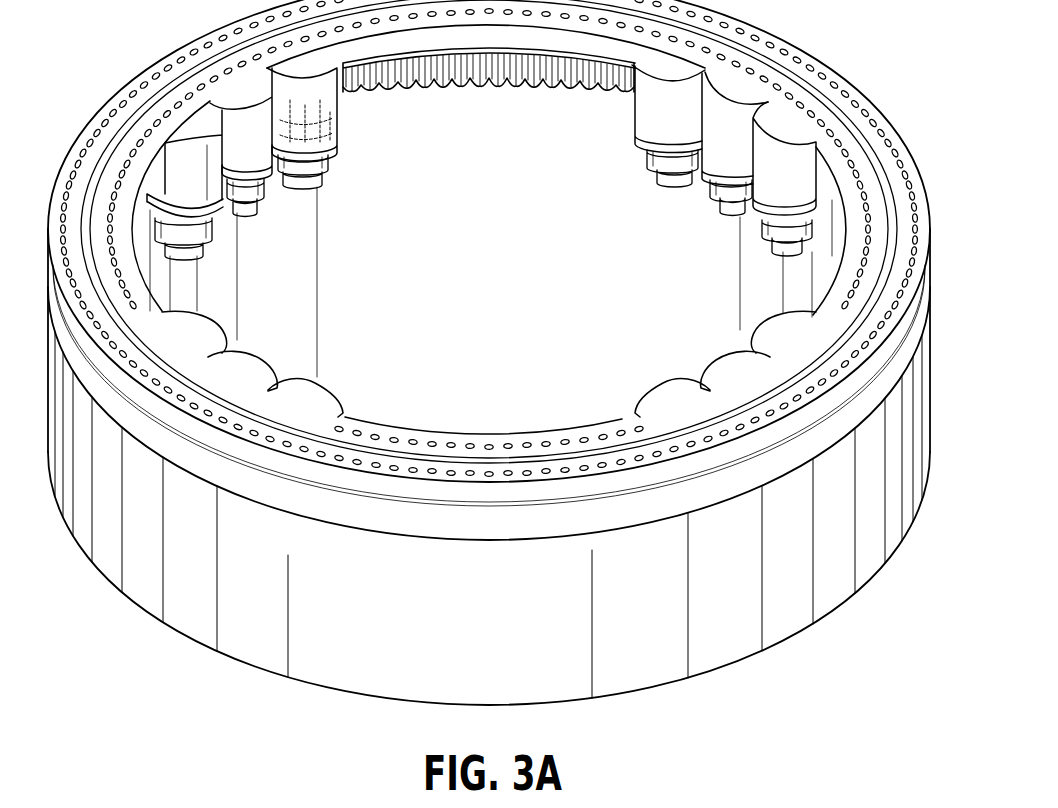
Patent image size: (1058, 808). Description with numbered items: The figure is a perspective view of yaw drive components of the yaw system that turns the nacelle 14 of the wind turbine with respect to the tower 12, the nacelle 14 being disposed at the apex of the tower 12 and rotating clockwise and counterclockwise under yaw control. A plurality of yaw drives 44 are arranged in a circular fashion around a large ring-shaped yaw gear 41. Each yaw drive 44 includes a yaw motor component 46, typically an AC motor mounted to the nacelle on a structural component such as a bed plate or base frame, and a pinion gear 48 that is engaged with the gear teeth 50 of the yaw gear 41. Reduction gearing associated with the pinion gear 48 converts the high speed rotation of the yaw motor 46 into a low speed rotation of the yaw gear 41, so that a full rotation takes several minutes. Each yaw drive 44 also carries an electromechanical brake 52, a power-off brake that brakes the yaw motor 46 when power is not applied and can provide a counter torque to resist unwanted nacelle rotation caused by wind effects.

The tower 12 is at (926, 382).
The nacelle 14 is at (205, 72).
The yaw gear 41 is at (486, 81).
The yaw drive 44 is at (340, 106).
The yaw motor component 46 is at (328, 145).
The pinion gear 48 is at (330, 133).
The gear teeth 50 is at (552, 78).
The brake 52 is at (312, 187).